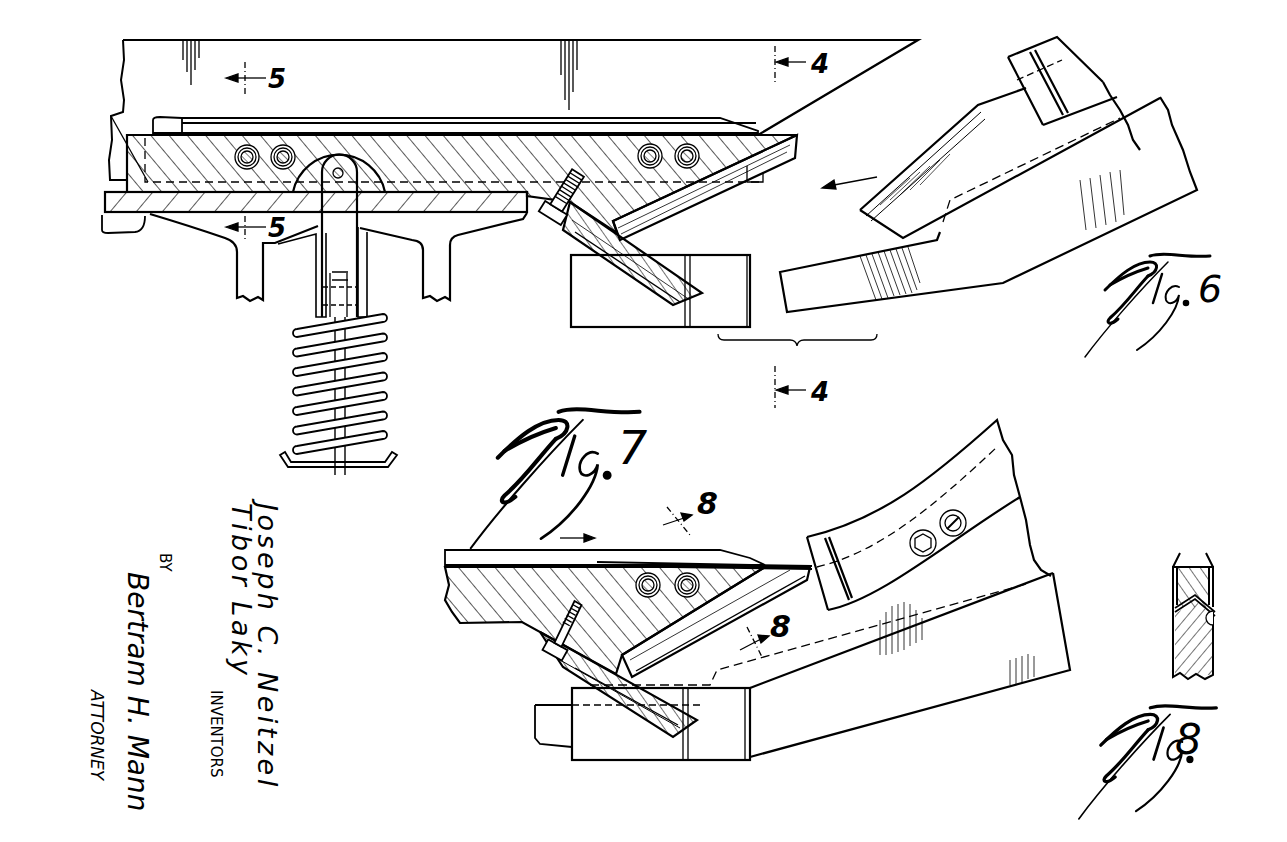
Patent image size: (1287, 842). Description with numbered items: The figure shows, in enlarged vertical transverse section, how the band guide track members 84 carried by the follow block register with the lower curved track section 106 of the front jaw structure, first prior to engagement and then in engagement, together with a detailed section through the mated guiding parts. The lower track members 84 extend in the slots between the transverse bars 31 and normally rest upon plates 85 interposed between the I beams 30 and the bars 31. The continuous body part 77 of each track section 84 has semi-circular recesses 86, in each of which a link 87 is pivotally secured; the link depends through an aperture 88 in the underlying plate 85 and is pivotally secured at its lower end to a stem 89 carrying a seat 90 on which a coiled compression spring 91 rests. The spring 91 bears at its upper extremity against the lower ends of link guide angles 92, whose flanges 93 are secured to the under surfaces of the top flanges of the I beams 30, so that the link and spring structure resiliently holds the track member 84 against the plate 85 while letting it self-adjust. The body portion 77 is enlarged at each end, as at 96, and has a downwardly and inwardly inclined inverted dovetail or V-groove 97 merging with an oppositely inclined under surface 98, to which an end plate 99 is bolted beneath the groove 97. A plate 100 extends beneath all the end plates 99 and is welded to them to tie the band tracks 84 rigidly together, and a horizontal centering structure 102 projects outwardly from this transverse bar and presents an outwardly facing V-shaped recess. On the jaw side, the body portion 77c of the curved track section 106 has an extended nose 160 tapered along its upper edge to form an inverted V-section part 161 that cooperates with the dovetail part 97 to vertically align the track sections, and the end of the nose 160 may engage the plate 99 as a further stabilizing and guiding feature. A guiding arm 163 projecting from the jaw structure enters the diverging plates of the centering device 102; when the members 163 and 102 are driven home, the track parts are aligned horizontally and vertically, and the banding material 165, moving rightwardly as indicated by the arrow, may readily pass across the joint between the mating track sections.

In FIG. 6, the transverse bars 31 is at (128, 70).
In FIG. 6, the band guide track members 84 is at (439, 118).
In FIG. 7, the band guide track members 84 is at (491, 551).
In FIG. 6, the body part 77 is at (492, 142).
In FIG. 7, the body part 77 is at (480, 617).
In FIG. 6, the plates 85 is at (187, 197).
In FIG. 6, the semi-circular recesses 86 is at (372, 168).
In FIG. 6, the link 87 is at (343, 166).
In FIG. 6, the aperture 88 is at (357, 200).
In FIG. 6, the I beams 30 is at (237, 283).
In FIG. 6, the flanges 93 is at (296, 240).
In FIG. 6, the link guide angles 92 is at (322, 281).
In FIG. 6, the stem 89 is at (296, 400).
In FIG. 6, the coiled compression spring 91 is at (385, 358).
In FIG. 6, the seat 90 is at (383, 468).
In FIG. 6, the enlarged end 96 is at (597, 203).
In FIG. 7, the enlarged end 96 is at (596, 635).
In FIG. 8, the enlarged end 96 is at (1180, 580).
In FIG. 6, the inverted dovetail or V-groove 97 is at (733, 160).
In FIG. 7, the inverted dovetail or V-groove 97 is at (700, 623).
In FIG. 8, the inverted dovetail or V-groove 97 is at (1203, 628).
In FIG. 6, the under surface 98 is at (590, 250).
In FIG. 7, the under surface 98 is at (562, 631).
In FIG. 6, the end plate 99 is at (617, 243).
In FIG. 7, the end plate 99 is at (565, 678).
In FIG. 6, the plate 100 is at (636, 281).
In FIG. 7, the plate 100 is at (612, 695).
In FIG. 6, the centering structure 102 is at (703, 320).
In FIG. 7, the centering structure 102 is at (753, 717).
In FIG. 6, the lower curved track section 106 is at (1006, 72).
In FIG. 7, the lower curved track section 106 is at (876, 508).
In FIG. 6, the body portion 77c is at (1125, 103).
In FIG. 7, the body portion 77c is at (1008, 533).
In FIG. 6, the inverted V-section part 161 is at (918, 170).
In FIG. 7, the inverted V-section part 161 is at (663, 650).
In FIG. 8, the inverted V-section part 161 is at (1178, 600).
In FIG. 6, the nose 160 is at (975, 160).
In FIG. 7, the nose 160 is at (747, 663).
In FIG. 8, the nose 160 is at (1203, 655).
In FIG. 6, the guiding arm 163 is at (1178, 190).
In FIG. 7, the guiding arm 163 is at (958, 683).
In FIG. 7, the banding material 165 is at (778, 558).